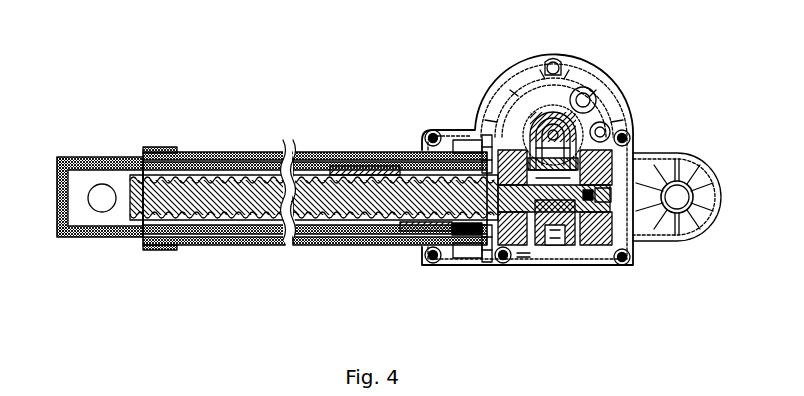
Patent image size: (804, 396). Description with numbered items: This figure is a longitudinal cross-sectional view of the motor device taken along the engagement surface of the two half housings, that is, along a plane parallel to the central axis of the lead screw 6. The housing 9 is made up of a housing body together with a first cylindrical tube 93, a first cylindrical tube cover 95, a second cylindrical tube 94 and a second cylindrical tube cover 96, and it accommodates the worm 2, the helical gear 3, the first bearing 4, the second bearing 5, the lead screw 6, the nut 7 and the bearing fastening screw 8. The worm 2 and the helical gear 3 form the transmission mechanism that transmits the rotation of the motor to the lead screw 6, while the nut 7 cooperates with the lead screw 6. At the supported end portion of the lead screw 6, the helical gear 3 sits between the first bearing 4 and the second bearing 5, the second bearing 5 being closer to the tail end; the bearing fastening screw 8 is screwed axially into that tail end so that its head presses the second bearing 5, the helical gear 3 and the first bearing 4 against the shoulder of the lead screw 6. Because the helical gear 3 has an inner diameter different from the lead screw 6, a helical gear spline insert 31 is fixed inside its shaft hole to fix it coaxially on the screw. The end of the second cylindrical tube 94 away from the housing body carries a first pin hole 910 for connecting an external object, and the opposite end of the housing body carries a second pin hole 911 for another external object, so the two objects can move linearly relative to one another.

The worm 2 is at (560, 132).
The helical gear 3 is at (552, 150).
The helical gear spline insert 31 is at (545, 213).
The first bearing 4 is at (513, 163).
The second bearing 5 is at (597, 162).
The lead screw 6 is at (368, 205).
The nut 7 is at (428, 224).
The bearing fastening screw 8 is at (600, 194).
The housing 9 is at (583, 63).
The first pin hole 910 is at (100, 200).
The second pin hole 911 is at (683, 197).
The first cylindrical tube 93 is at (355, 152).
The second cylindrical tube 94 is at (262, 153).
The first cylindrical tube cover 95 is at (143, 158).
The second cylindrical tube cover 96 is at (72, 158).